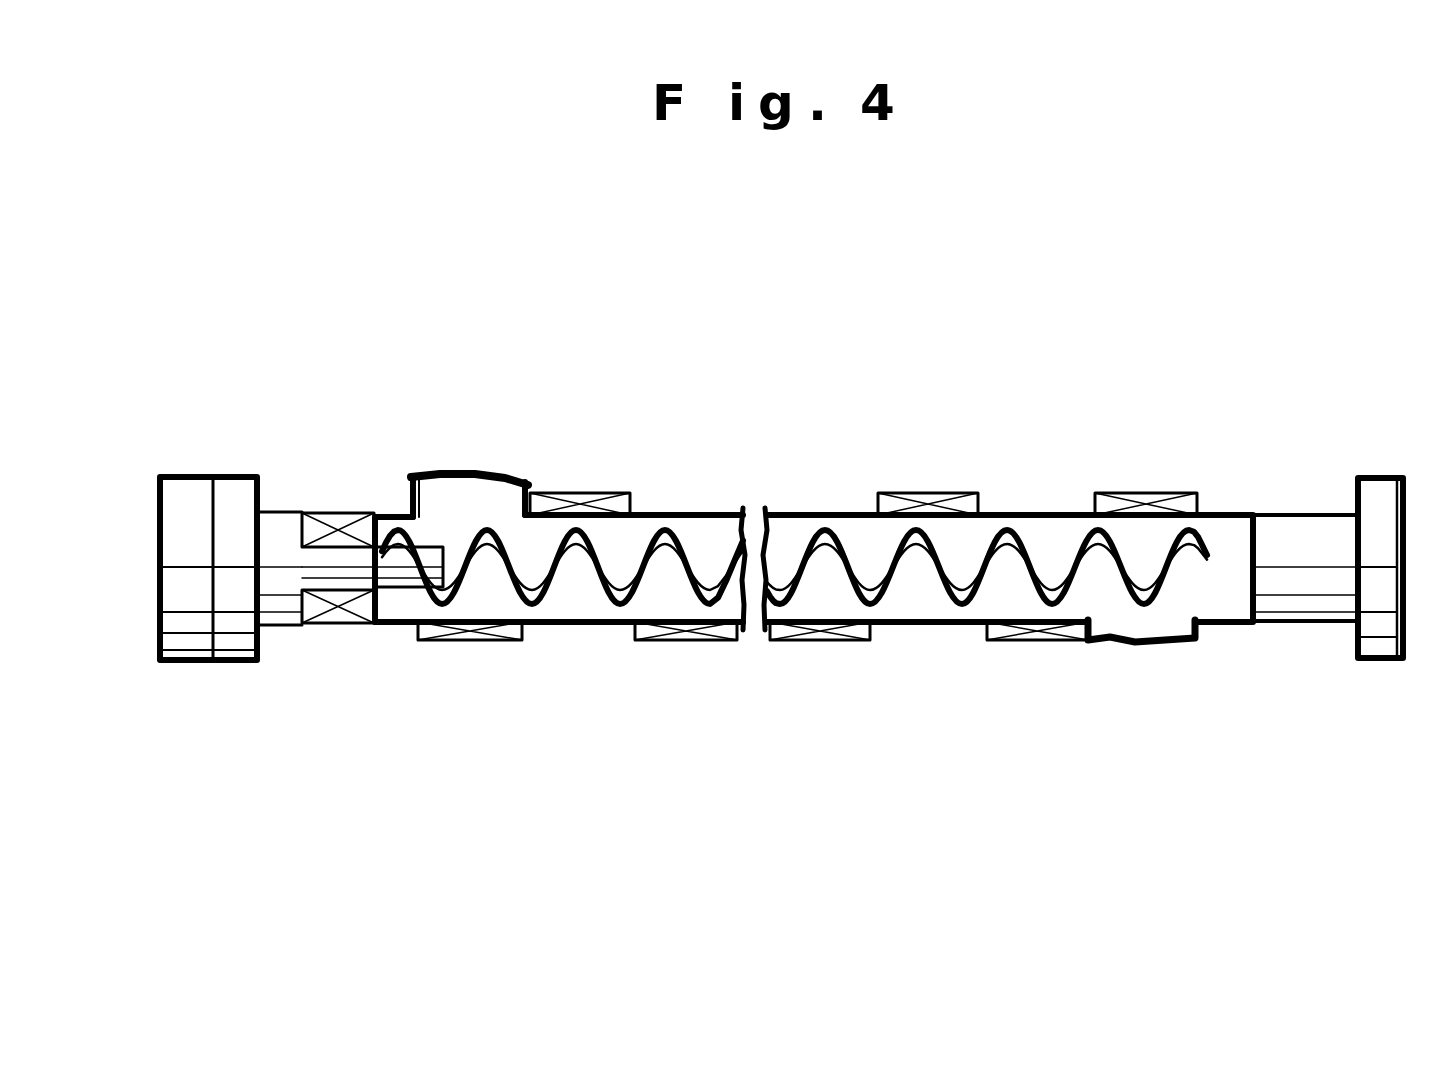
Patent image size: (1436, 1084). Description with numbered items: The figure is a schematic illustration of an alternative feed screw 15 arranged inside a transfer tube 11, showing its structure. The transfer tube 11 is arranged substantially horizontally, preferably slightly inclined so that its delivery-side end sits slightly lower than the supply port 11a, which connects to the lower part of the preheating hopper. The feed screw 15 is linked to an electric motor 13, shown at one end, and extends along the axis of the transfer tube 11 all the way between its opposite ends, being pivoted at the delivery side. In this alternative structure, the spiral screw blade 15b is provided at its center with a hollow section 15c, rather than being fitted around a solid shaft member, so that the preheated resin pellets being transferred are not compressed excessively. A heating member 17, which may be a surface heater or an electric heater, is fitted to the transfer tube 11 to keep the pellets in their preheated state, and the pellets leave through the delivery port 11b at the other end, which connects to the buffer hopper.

The transfer tube 11 is at (825, 541).
The supply port 11a is at (413, 487).
The delivery port 11b is at (1203, 637).
The electric motor 13 is at (175, 612).
The feed screw 15 is at (794, 581).
The screw blade 15b is at (877, 590).
The hollow section 15c is at (716, 553).
The heating member 17 is at (548, 493).